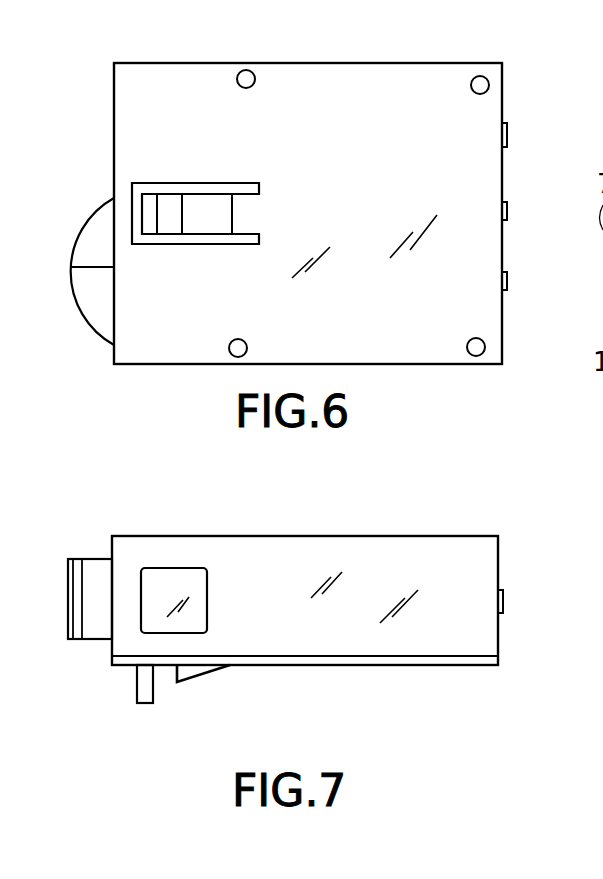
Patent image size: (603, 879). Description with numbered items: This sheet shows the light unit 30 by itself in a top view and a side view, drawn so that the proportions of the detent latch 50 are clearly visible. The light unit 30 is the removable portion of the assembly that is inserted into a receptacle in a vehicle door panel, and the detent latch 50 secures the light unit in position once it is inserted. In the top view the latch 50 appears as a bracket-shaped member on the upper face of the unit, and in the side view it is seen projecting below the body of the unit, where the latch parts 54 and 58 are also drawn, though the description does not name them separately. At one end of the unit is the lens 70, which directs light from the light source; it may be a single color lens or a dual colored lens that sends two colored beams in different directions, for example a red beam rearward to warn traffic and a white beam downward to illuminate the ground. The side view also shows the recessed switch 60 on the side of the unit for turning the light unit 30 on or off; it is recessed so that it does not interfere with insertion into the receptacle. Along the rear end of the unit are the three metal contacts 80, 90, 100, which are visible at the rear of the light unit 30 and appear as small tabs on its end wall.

In FIG. 6, the light unit 30 is at (462, 402).
In FIG. 7, the light unit 30 is at (438, 697).
In FIG. 6, the detent latch 50 is at (245, 182).
In FIG. 7, the detent latch 50 is at (237, 667).
In FIG. 6, the clip 54 is at (207, 207).
In FIG. 7, the clip 54 is at (195, 678).
In FIG. 6, the leg 58 is at (152, 198).
In FIG. 7, the leg 58 is at (137, 683).
In FIG. 7, the recessed switch 60 is at (177, 578).
In FIG. 6, the lens 70 is at (80, 243).
In FIG. 7, the lens 70 is at (87, 570).
In FIG. 6, the metal contact 80 is at (507, 135).
In FIG. 7, the metal contact 80 is at (505, 598).
In FIG. 6, the metal contact 90 is at (507, 212).
In FIG. 6, the metal contact 100 is at (507, 282).